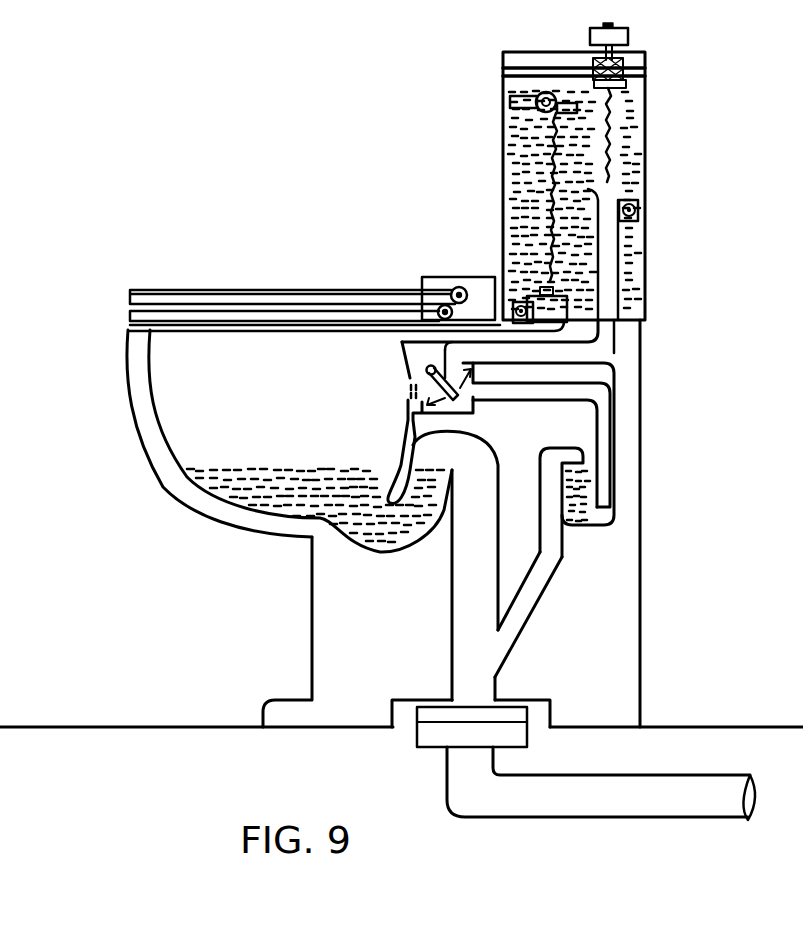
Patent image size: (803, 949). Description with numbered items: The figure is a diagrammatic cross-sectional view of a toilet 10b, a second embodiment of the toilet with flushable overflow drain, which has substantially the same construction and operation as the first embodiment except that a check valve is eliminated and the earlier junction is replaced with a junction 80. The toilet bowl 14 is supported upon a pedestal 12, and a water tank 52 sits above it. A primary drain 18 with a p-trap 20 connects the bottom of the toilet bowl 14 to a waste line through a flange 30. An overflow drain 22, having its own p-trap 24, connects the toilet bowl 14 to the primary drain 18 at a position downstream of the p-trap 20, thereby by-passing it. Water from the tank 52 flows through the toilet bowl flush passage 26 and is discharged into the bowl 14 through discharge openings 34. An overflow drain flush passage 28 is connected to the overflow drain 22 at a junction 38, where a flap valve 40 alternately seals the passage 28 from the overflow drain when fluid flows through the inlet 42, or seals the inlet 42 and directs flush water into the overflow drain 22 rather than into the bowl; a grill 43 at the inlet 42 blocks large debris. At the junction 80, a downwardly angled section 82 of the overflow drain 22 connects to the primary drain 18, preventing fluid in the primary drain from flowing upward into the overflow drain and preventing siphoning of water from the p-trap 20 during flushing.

The toilet with flushable overflow drain 10b is at (156, 162).
The water tank 52 is at (505, 163).
The overflow drain flush passage 28 is at (625, 330).
The toilet bowl flush passage 26 is at (468, 330).
The discharge openings 34 is at (376, 341).
The valve 40 is at (413, 382).
The grill 43 is at (403, 383).
The inlet 42 is at (405, 401).
The junction 38 is at (472, 415).
The overflow drain 22 is at (618, 410).
The p-trap 24 is at (619, 474).
The toilet bowl 14 is at (130, 372).
The p-trap 20 is at (380, 568).
The primary drain 18 is at (450, 572).
The downwardly angled section 82 is at (528, 595).
The junction 80 is at (512, 656).
The pedestal 12 is at (318, 615).
The flange 30 is at (415, 731).